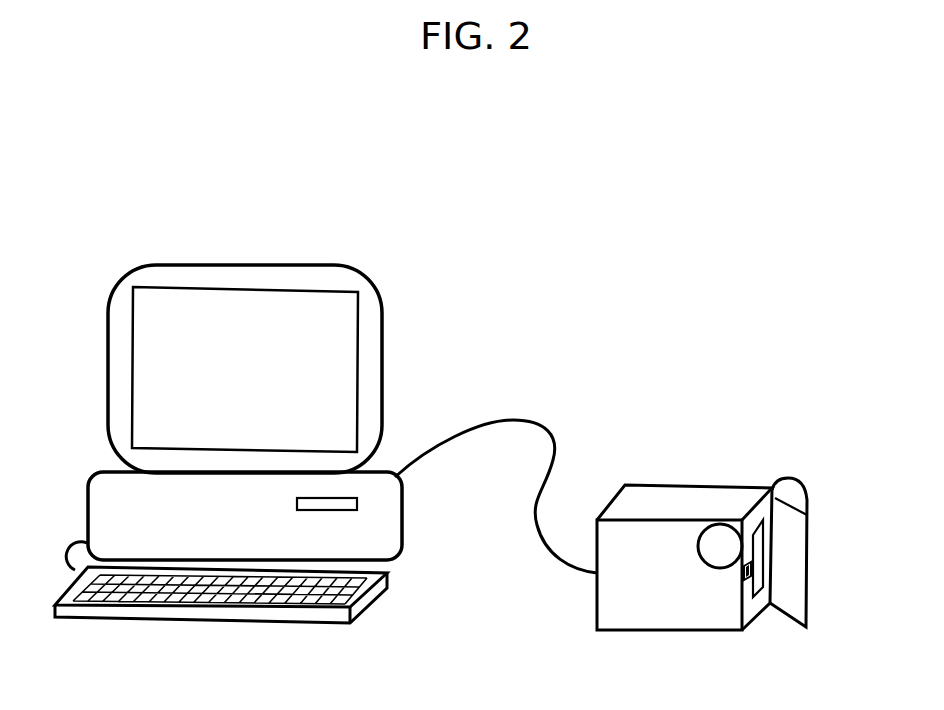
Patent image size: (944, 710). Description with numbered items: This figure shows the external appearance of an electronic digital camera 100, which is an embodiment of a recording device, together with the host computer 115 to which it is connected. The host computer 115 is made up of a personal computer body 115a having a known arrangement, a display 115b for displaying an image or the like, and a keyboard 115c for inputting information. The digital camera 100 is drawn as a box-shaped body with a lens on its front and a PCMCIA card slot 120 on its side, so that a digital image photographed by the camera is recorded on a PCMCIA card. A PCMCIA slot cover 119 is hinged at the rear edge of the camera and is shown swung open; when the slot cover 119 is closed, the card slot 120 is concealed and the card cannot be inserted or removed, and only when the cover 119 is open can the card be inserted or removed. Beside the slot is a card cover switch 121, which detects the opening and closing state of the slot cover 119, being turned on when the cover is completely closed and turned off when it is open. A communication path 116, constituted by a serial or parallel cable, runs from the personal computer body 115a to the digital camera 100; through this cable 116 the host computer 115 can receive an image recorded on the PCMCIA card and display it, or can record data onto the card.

The host computer 115 is at (265, 202).
The personal computer body 115a is at (395, 528).
The display 115b is at (368, 340).
The keyboard 115c is at (393, 585).
The communication path 116 is at (518, 418).
The digital camera 100 is at (658, 485).
The PCMCIA slot cover 119 is at (792, 478).
The PCMCIA card slot 120 is at (753, 597).
The card cover switch 121 is at (744, 578).